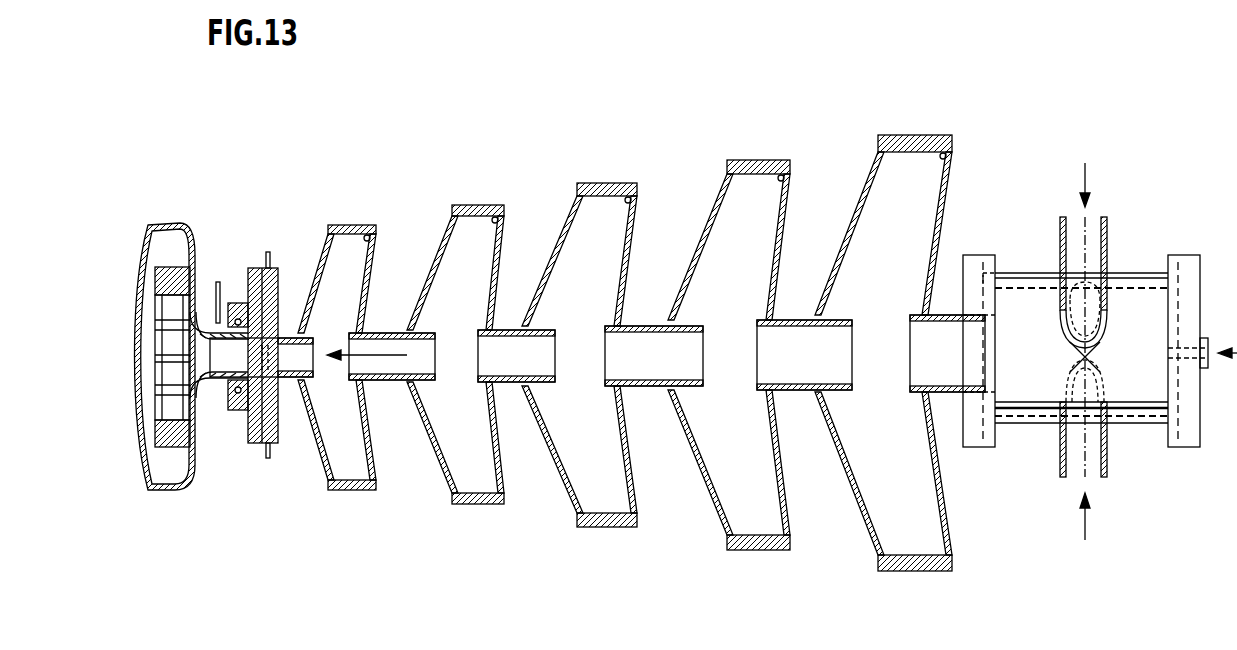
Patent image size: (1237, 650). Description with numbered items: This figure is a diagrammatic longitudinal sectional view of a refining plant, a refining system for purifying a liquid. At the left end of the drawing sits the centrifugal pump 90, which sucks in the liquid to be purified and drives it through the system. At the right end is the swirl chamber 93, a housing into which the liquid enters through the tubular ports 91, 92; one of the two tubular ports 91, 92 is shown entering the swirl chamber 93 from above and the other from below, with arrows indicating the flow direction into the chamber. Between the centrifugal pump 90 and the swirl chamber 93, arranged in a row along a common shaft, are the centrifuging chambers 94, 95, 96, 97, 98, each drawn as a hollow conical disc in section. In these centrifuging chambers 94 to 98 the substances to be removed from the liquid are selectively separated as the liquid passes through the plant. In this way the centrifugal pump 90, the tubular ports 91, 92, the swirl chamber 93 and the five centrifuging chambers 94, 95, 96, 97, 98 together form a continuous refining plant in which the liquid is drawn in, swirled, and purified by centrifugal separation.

The centrifugal pump 90 is at (176, 250).
The tubular port 91 is at (1062, 240).
The tubular port 92 is at (1068, 452).
The swirl chamber 93 is at (1045, 349).
The centrifuging chamber 94 is at (946, 198).
The centrifuging chamber 95 is at (786, 210).
The centrifuging chamber 96 is at (634, 234).
The centrifuging chamber 97 is at (500, 240).
The centrifuging chamber 98 is at (374, 253).